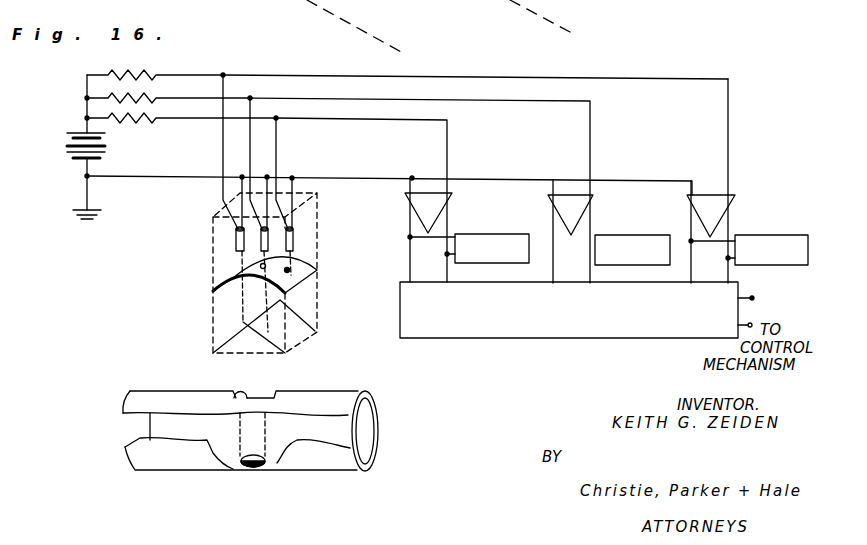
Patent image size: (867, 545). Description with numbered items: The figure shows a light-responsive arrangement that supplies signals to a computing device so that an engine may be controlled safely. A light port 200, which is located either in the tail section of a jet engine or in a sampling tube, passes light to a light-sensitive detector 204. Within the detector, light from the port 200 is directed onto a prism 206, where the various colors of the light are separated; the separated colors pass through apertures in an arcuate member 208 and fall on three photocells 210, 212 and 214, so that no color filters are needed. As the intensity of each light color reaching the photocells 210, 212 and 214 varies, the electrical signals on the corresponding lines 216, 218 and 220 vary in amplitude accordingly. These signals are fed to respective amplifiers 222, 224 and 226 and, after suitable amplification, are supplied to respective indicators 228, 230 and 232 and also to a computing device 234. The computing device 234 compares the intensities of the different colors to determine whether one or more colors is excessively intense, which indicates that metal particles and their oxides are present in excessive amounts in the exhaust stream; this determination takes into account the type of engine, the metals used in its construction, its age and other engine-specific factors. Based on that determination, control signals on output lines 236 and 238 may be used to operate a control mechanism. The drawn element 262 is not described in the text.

The light port 200 is at (239, 390).
The light-sensitive detector 204 is at (209, 221).
The prism 206 is at (303, 320).
The arcuate member 208 is at (305, 267).
The photocell 210 is at (236, 241).
The photocell 212 is at (261, 244).
The photocell 214 is at (293, 232).
The line 216 is at (647, 78).
The line 218 is at (517, 103).
The line 220 is at (370, 122).
The amplifier 222 is at (742, 166).
The amplifier 224 is at (594, 195).
The amplifier 226 is at (452, 194).
The indicator 228 is at (780, 231).
The indicator 230 is at (628, 233).
The indicator 232 is at (483, 233).
The computing device 234 is at (480, 340).
The output line 236 is at (743, 296).
The output line 238 is at (767, 310).
The dome transducer 262 is at (247, 473).